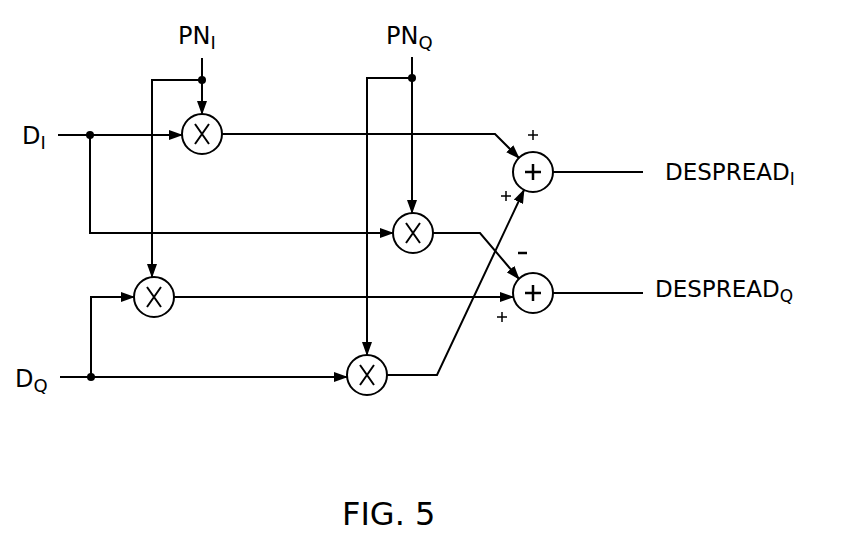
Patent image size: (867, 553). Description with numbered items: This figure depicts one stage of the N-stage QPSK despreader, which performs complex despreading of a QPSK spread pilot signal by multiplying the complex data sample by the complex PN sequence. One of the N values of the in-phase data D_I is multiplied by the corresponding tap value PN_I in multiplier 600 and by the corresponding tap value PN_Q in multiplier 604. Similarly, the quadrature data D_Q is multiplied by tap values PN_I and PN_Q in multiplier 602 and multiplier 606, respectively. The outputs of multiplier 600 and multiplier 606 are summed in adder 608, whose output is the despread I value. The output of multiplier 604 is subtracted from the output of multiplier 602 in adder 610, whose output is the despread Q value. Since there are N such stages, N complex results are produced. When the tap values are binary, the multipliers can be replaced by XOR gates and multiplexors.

The multiplier 600 is at (217, 118).
The multiplier 602 is at (170, 282).
The multiplier 604 is at (428, 218).
The multiplier 606 is at (358, 356).
The adder 608 is at (548, 160).
The adder 610 is at (548, 281).